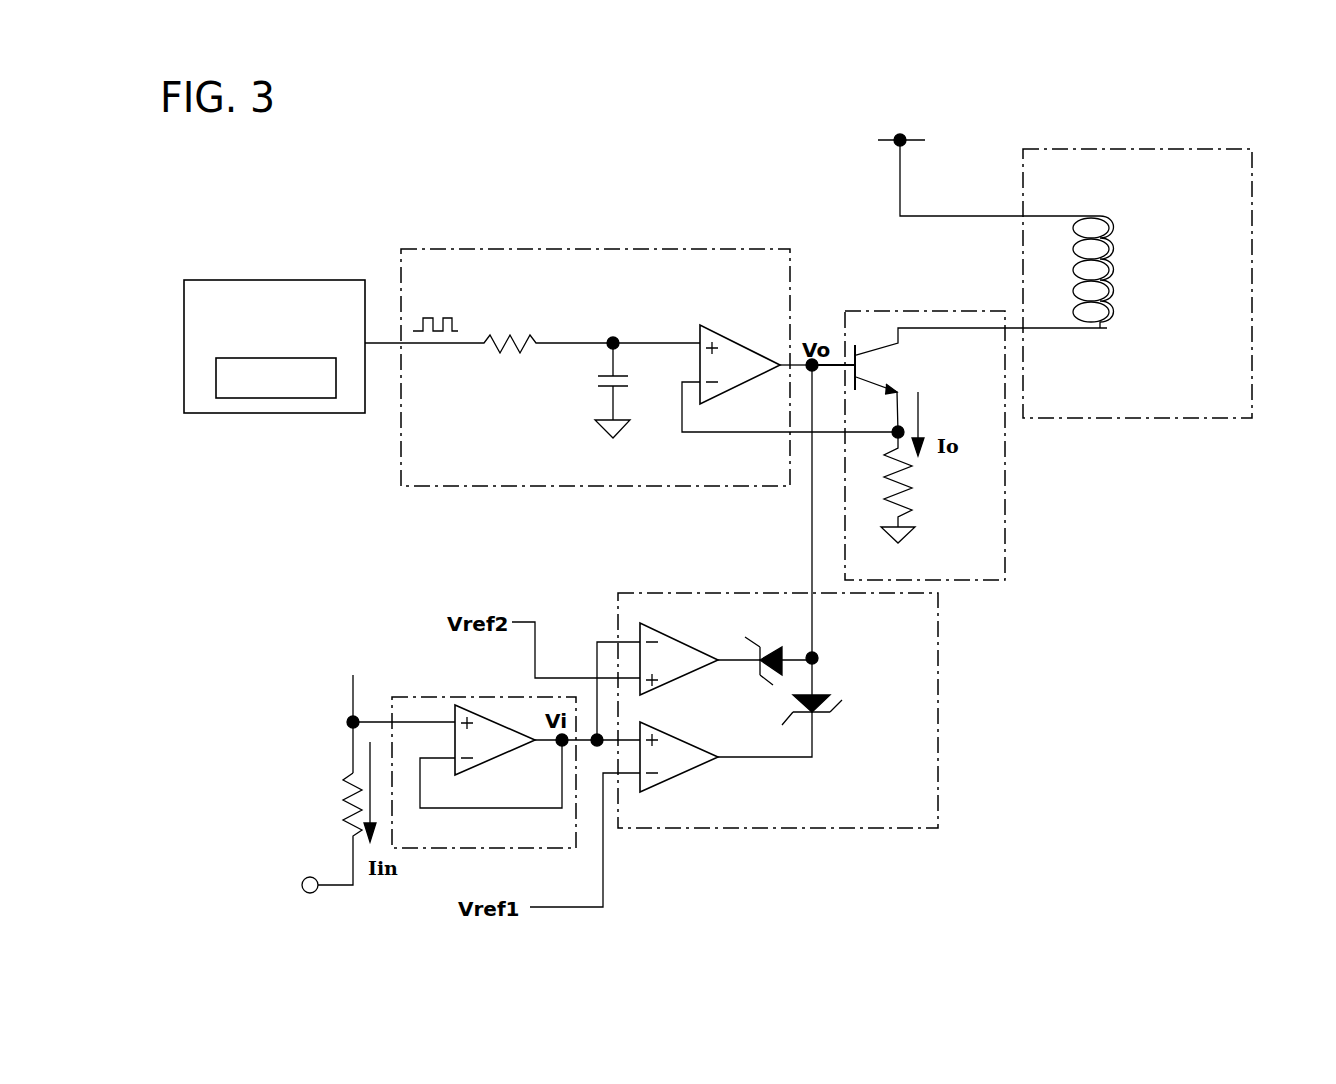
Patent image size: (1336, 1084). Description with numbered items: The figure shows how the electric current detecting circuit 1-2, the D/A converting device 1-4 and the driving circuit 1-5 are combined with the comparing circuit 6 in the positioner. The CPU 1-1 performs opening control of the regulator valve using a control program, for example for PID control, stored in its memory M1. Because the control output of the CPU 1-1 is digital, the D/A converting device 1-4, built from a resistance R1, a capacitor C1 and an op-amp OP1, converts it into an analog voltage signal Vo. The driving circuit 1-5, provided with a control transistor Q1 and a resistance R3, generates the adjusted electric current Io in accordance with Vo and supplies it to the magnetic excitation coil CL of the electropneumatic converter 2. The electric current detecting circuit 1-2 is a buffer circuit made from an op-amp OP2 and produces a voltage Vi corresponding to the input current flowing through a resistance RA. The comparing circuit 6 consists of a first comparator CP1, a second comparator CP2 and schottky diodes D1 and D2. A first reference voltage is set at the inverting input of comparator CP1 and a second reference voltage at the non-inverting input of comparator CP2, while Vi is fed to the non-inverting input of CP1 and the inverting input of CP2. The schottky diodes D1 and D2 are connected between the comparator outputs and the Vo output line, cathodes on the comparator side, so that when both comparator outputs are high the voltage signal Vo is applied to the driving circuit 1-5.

The CPU 1-1 is at (283, 279).
The memory M1 is at (266, 397).
The D/A converting device 1-4 is at (603, 250).
The resistance R1 is at (545, 361).
The capacitor C1 is at (597, 387).
The op-amp OP1 is at (700, 327).
The driving circuit 1-5 is at (1007, 532).
The control transistor Q1 is at (959, 380).
The resistance R3 is at (914, 487).
The electropneumatic converter 2 is at (1113, 149).
The magnetic excitation coil CL is at (1112, 272).
The electric current detecting circuit 1-2 is at (425, 697).
The resistance RA is at (331, 833).
The op-amp OP2 is at (490, 752).
The comparing circuit 6 is at (903, 828).
The second comparator CP2 is at (665, 655).
The first comparator CP1 is at (673, 770).
The schottky diode D1 is at (784, 707).
The schottky diode D2 is at (778, 651).